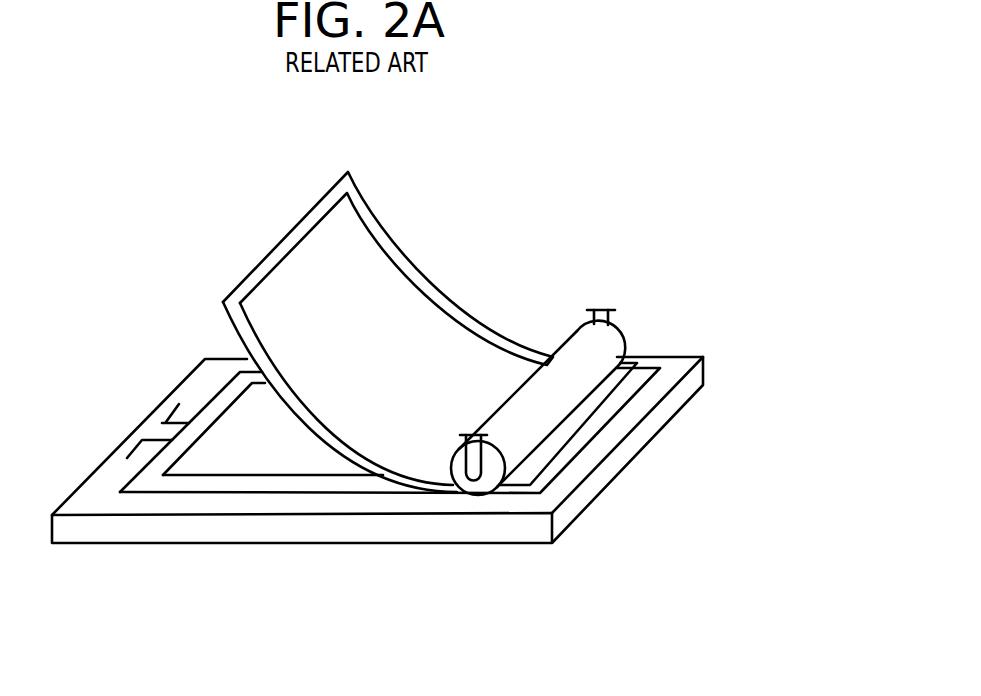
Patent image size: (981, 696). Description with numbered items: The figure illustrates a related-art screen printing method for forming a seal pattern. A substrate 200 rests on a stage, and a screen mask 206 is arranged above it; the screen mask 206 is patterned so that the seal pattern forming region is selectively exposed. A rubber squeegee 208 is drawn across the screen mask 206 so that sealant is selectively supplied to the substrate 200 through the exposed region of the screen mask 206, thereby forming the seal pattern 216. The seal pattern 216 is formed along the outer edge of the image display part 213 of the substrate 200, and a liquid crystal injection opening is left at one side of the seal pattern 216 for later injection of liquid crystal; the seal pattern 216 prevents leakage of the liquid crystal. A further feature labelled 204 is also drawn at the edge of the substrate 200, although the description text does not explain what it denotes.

The substrate 200 is at (386, 532).
The alignment guide 204 is at (158, 433).
The screen mask 206 is at (406, 262).
The rubber squeegee 208 is at (567, 358).
The image display part 213 is at (258, 465).
The seal pattern 216 is at (188, 492).